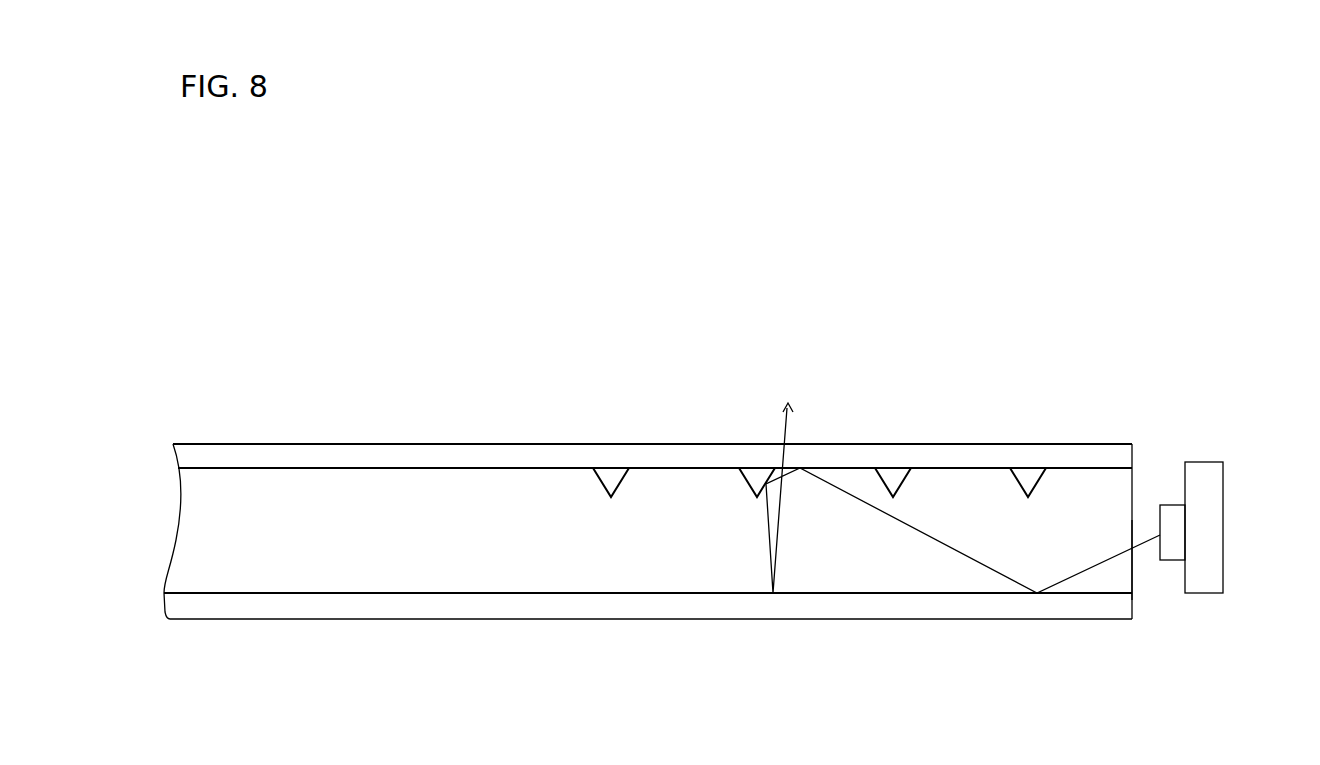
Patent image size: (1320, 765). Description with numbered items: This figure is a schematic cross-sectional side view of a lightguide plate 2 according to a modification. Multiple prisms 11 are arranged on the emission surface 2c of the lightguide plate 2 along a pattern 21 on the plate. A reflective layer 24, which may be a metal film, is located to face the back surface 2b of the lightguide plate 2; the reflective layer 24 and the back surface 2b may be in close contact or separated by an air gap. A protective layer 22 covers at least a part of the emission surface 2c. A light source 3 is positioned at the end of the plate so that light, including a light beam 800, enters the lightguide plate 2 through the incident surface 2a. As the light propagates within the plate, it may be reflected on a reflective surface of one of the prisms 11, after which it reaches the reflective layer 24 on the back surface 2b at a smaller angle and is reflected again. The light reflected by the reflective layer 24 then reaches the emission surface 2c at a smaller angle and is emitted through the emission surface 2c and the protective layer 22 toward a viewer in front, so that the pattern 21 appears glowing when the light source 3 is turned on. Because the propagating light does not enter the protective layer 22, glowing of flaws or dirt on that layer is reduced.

The lightguide plate 2 is at (378, 575).
The incident surface 2a is at (1133, 565).
The back surface 2b is at (308, 595).
The emission surface 2c is at (302, 465).
The light source 3 is at (1203, 470).
The prisms 11 is at (758, 477).
The pattern 21 is at (1062, 392).
The protective layer 22 is at (1120, 457).
The reflective layer 24 is at (1123, 607).
The light beam 800 is at (778, 547).